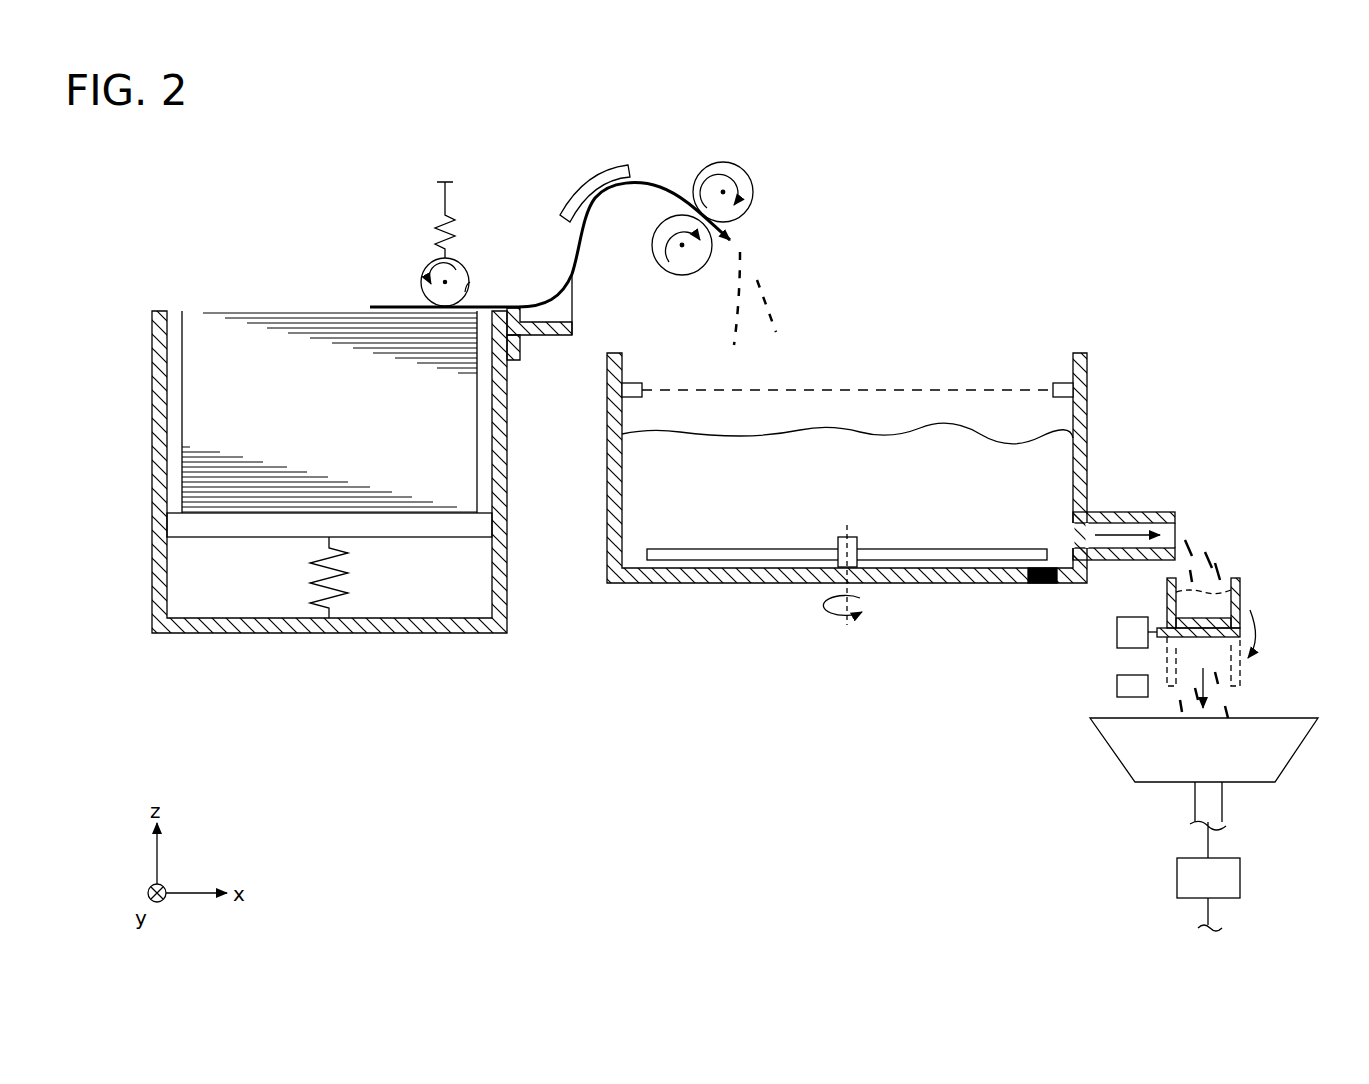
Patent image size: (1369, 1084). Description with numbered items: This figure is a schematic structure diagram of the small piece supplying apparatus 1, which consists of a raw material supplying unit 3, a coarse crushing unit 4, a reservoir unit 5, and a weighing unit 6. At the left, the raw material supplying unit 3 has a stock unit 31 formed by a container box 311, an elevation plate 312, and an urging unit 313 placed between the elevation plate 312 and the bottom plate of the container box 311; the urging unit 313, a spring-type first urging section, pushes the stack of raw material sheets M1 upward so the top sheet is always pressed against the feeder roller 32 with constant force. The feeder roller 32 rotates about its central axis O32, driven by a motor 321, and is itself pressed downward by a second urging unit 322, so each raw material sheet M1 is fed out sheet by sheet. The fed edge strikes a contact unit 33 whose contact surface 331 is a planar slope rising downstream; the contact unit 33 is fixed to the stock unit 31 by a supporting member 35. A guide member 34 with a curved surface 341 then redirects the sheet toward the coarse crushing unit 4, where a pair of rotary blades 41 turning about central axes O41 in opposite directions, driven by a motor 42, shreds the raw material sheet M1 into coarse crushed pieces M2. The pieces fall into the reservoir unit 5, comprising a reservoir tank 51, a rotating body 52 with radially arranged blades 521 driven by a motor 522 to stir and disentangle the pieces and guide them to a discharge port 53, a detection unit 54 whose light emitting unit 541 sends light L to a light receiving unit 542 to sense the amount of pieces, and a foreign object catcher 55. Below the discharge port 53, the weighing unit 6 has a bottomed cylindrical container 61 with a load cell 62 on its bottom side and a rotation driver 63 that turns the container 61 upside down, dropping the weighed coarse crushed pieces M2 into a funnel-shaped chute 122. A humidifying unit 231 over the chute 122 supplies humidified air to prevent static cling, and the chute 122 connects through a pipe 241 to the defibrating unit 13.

The small piece supplying apparatus 1 is at (1235, 170).
The raw material supplying unit 3 is at (520, 150).
The stock unit 31 is at (289, 508).
The container box 311 is at (450, 622).
The elevation plate 312 is at (220, 530).
The urging unit 313 is at (340, 590).
The feeder roller 32 is at (398, 265).
The central axis O32 is at (440, 282).
The motor 321 is at (468, 290).
The urging unit 322 is at (437, 240).
The contact unit 33 is at (573, 350).
The contact surface 331 is at (550, 335).
The supporting member 35 is at (548, 330).
The guide member 34 is at (554, 163).
The curved surface 341 is at (560, 218).
The raw material sheet M1 is at (215, 408).
The coarse crushing unit 4 is at (727, 150).
The rotary blade 41 is at (713, 234).
The central axis O41 is at (723, 192).
The motor 42 is at (735, 205).
The coarse crushed pieces M2 is at (777, 332).
The reservoir unit 5 is at (1085, 350).
The reservoir tank 51 is at (1082, 410).
The rotating body 52 is at (793, 586).
The blade 521 is at (945, 565).
The motor 522 is at (852, 537).
The discharge port 53 is at (1138, 512).
The detection unit 54 is at (814, 388).
The light emitting unit 541 is at (1065, 383).
The light receiving unit 542 is at (638, 398).
The light L is at (907, 385).
The foreign object catcher 55 is at (1040, 583).
The weighing unit 6 is at (1248, 582).
The container 61 is at (1242, 682).
The load cell 62 is at (1157, 633).
The rotation driver 63 is at (1117, 633).
The humidifying unit 231 is at (1117, 688).
The chute 122 is at (1118, 752).
The pipe 241 is at (1222, 808).
The defibrating unit 13 is at (1240, 878).